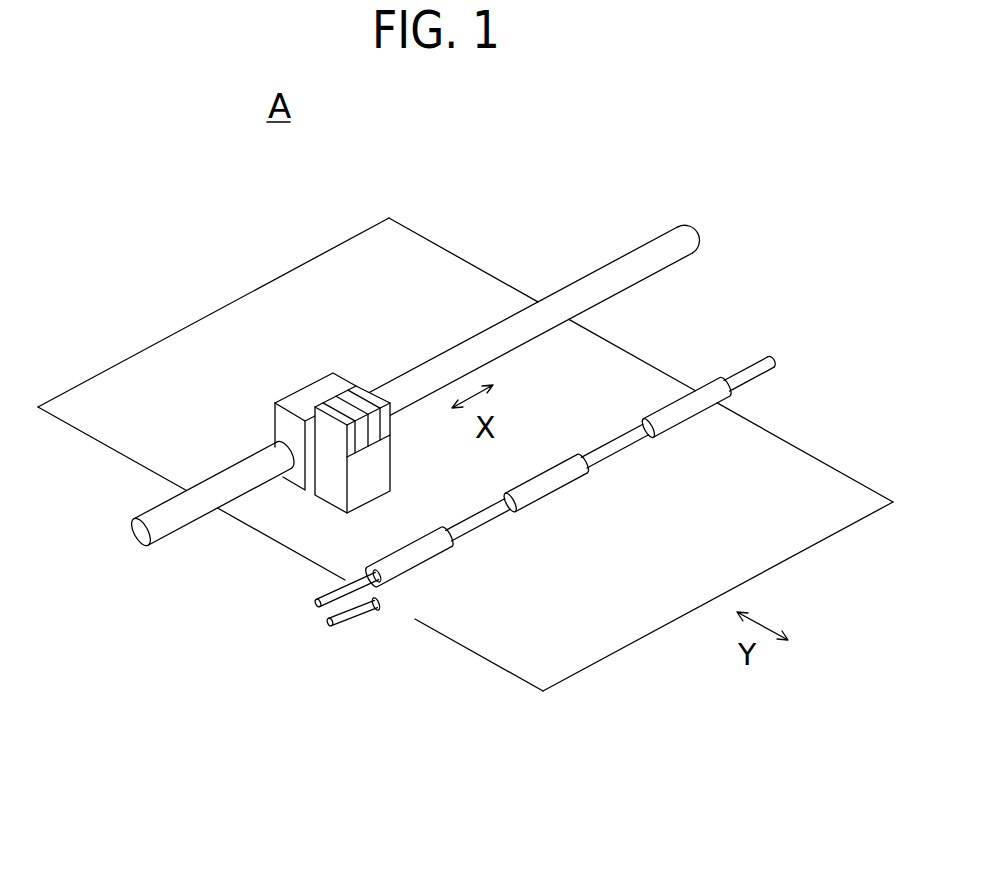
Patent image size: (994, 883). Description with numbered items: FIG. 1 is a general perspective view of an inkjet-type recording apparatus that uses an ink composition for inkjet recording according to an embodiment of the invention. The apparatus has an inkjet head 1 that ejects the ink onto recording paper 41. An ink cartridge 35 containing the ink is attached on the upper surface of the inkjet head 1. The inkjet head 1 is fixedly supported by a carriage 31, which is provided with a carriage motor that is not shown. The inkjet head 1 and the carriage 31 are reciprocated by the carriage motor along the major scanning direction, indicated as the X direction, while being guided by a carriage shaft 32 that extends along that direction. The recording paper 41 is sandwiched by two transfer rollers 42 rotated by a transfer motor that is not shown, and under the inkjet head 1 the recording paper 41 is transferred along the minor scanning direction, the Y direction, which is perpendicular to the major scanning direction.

The inkjet head 1 is at (303, 412).
The carriage 31 is at (310, 385).
The carriage shaft 32 is at (641, 249).
The ink cartridge 35 is at (366, 388).
The recording paper 41 is at (510, 674).
The transfer rollers 42 is at (418, 568).